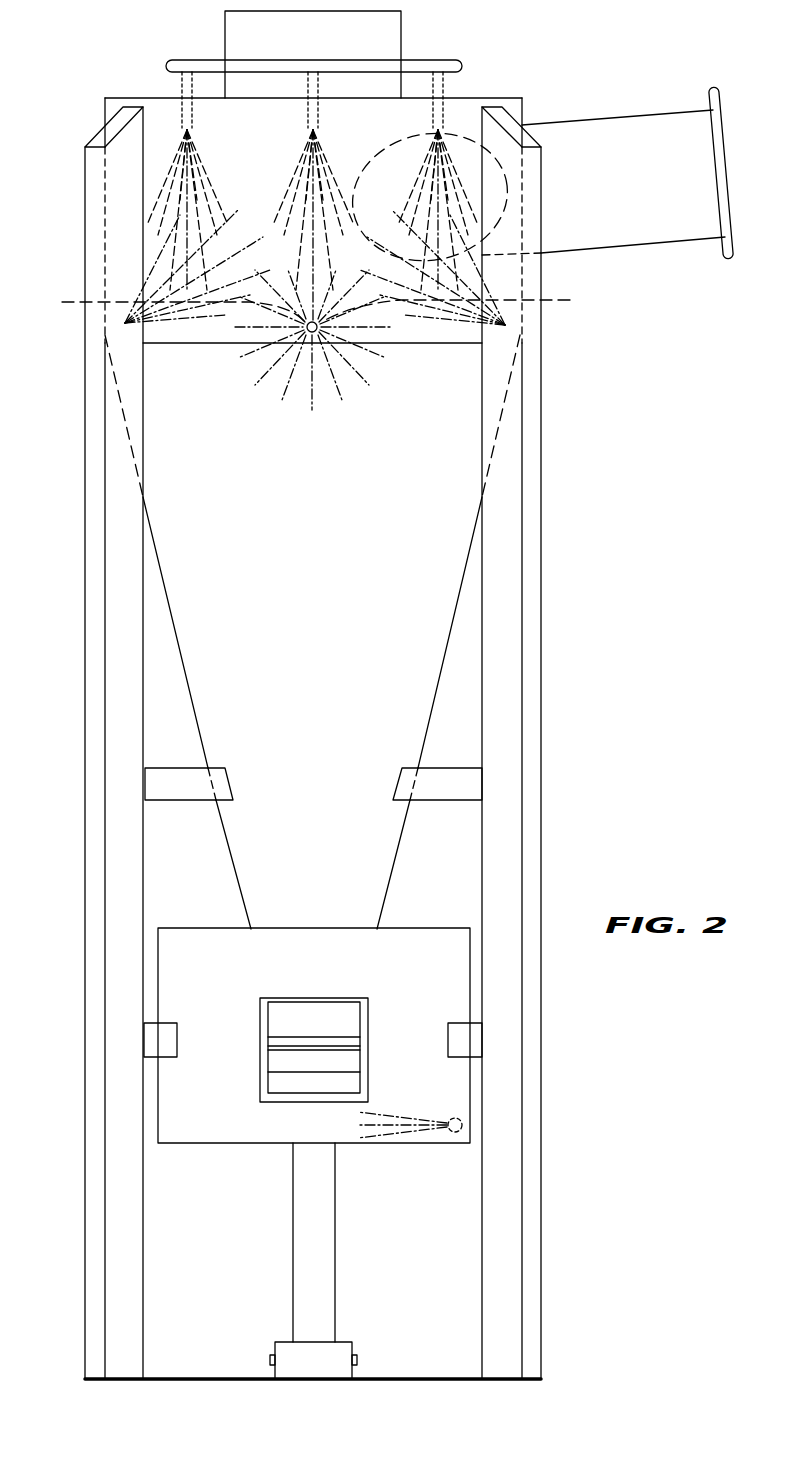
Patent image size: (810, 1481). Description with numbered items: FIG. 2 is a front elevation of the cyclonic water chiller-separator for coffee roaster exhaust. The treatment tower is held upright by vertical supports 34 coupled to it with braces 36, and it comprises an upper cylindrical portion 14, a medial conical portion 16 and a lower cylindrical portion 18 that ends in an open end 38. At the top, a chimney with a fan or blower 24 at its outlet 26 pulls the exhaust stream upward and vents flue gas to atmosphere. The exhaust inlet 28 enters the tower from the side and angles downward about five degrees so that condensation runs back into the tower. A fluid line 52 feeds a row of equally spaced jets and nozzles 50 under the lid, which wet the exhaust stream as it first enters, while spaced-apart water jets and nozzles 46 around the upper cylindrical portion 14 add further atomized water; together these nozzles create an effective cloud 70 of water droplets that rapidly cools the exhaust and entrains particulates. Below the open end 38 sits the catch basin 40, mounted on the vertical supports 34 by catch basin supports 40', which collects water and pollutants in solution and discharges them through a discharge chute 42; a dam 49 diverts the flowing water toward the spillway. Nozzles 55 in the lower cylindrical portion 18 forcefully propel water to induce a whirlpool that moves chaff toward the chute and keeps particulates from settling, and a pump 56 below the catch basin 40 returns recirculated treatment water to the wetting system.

The upper cylindrical portion 14 is at (155, 250).
The medial conical portion 16 is at (417, 560).
The lower cylindrical portion 18 is at (293, 1043).
The fan or blower 24 is at (225, 32).
The outlet 26 is at (385, 40).
The exhaust inlet 28 is at (598, 118).
The vertical supports 34 is at (527, 497).
The braces 36 is at (453, 787).
The open end 38 is at (287, 1073).
The catch basin 40 is at (252, 1045).
The catch basin supports 40' is at (319, 1034).
The discharge chute 42 is at (267, 1080).
The water jets and nozzles 46 is at (122, 322).
The dam 49 is at (343, 1018).
The jets and nozzles 50 is at (305, 115).
The fluid line 52 is at (430, 60).
The nozzles 55 is at (467, 1123).
The pump 56 is at (303, 1352).
The cloud of water droplets 70 is at (187, 203).